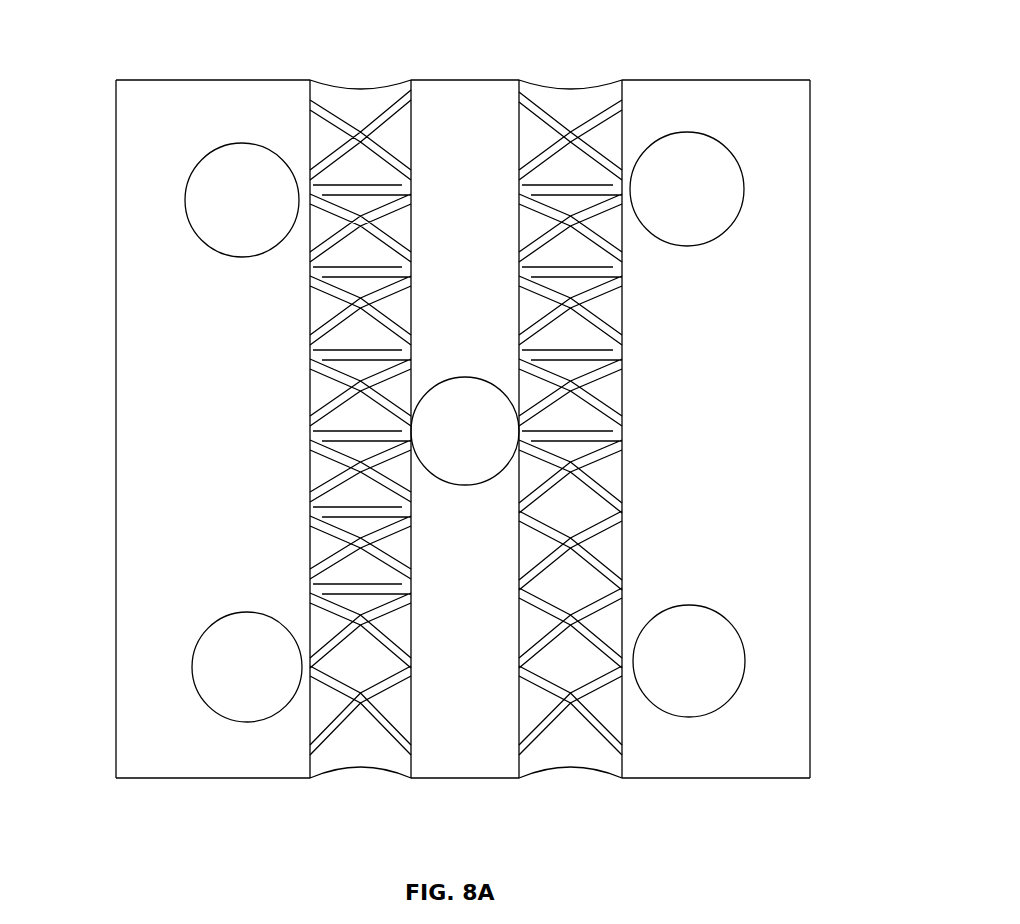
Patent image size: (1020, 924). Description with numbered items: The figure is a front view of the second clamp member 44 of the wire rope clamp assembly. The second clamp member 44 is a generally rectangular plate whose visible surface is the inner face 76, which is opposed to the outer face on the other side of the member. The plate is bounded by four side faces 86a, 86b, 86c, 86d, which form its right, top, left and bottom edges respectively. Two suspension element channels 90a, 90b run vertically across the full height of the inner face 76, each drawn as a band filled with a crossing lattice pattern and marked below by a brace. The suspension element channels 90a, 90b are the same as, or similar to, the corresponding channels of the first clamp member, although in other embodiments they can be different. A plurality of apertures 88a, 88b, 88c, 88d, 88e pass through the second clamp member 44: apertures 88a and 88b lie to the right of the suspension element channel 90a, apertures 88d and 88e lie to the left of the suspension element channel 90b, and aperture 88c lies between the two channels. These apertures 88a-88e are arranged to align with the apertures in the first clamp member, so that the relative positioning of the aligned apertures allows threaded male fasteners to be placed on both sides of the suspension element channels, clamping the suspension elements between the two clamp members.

The second clamp member 44 is at (812, 43).
The inner face 76 is at (795, 553).
The side face 86a is at (795, 740).
The side face 86b is at (720, 76).
The side face 86c is at (116, 232).
The side face 86d is at (148, 780).
The aperture 88a is at (720, 615).
The aperture 88b is at (712, 137).
The aperture 88c is at (463, 487).
The aperture 88d is at (212, 150).
The aperture 88e is at (212, 627).
The suspension element channel 90a is at (622, 785).
The suspension element channel 90b is at (411, 785).